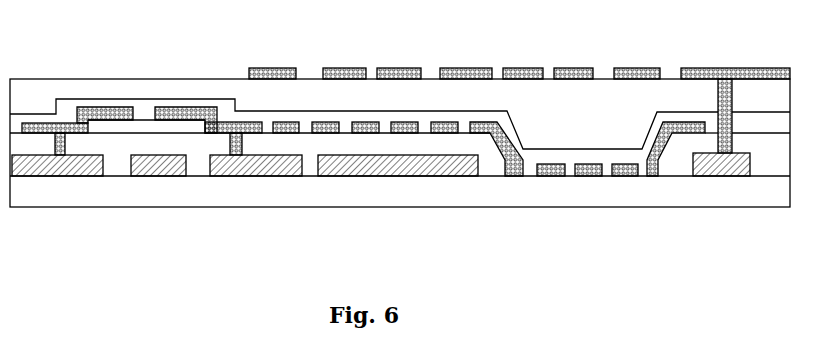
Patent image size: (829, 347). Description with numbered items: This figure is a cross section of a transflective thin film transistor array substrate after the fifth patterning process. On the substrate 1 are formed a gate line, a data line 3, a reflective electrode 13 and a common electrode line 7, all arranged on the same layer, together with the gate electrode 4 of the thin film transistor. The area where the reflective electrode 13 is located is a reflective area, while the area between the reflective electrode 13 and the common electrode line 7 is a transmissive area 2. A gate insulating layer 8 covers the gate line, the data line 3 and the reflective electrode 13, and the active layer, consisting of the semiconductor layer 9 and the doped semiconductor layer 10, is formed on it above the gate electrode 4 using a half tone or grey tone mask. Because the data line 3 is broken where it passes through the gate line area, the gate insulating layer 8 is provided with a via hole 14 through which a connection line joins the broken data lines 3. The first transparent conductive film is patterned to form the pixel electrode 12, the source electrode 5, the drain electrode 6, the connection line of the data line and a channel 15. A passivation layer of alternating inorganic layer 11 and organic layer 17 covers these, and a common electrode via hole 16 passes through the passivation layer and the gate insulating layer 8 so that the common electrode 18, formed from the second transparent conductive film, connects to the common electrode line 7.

The substrate 1 is at (97, 193).
The transmissive area 2 is at (612, 130).
The data line 3 is at (250, 167).
The gate electrode 4 is at (162, 170).
The source electrode 5 is at (80, 110).
The drain electrode 6 is at (193, 113).
The common electrode line 7 is at (720, 167).
The gate insulating layer 8 is at (459, 147).
The semiconductor layer 9 is at (117, 125).
The doped semiconductor layer 10 is at (160, 120).
The inorganic layer 11 is at (332, 117).
The pixel electrode 12 is at (553, 177).
The reflective electrode 13 is at (388, 167).
The via hole for the connection line of the data line 14 is at (236, 133).
The channel 15 is at (143, 120).
The common electrode via hole 16 is at (727, 79).
The organic layer 17 is at (422, 100).
The common electrode 18 is at (572, 75).